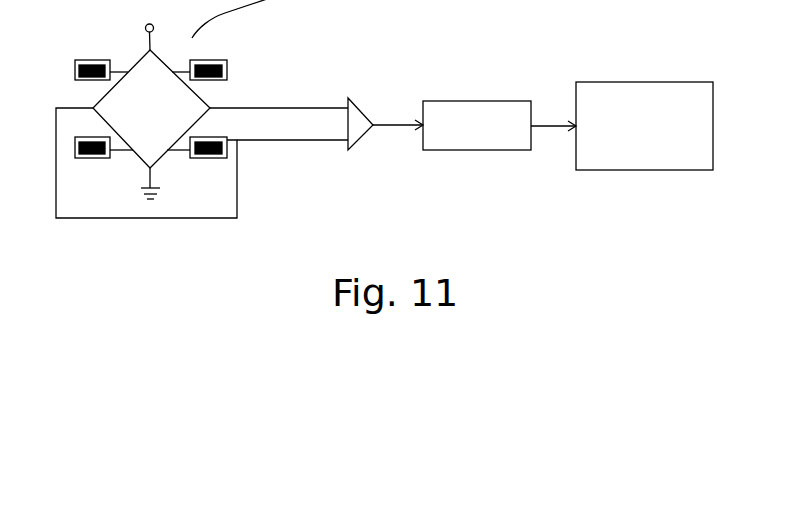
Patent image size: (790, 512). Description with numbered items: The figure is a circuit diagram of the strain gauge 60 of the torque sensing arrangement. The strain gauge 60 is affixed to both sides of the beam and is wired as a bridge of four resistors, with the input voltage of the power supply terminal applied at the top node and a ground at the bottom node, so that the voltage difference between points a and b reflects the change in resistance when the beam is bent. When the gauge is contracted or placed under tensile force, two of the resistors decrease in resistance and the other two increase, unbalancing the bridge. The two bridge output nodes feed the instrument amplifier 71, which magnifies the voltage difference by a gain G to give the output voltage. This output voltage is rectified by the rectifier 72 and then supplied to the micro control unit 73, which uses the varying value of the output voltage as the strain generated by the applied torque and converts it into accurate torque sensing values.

The strain gauge 60 is at (205, 160).
The instrument amplifier 71 is at (375, 133).
The rectifier 72 is at (477, 101).
The micro control unit (MCU) 73 is at (643, 82).